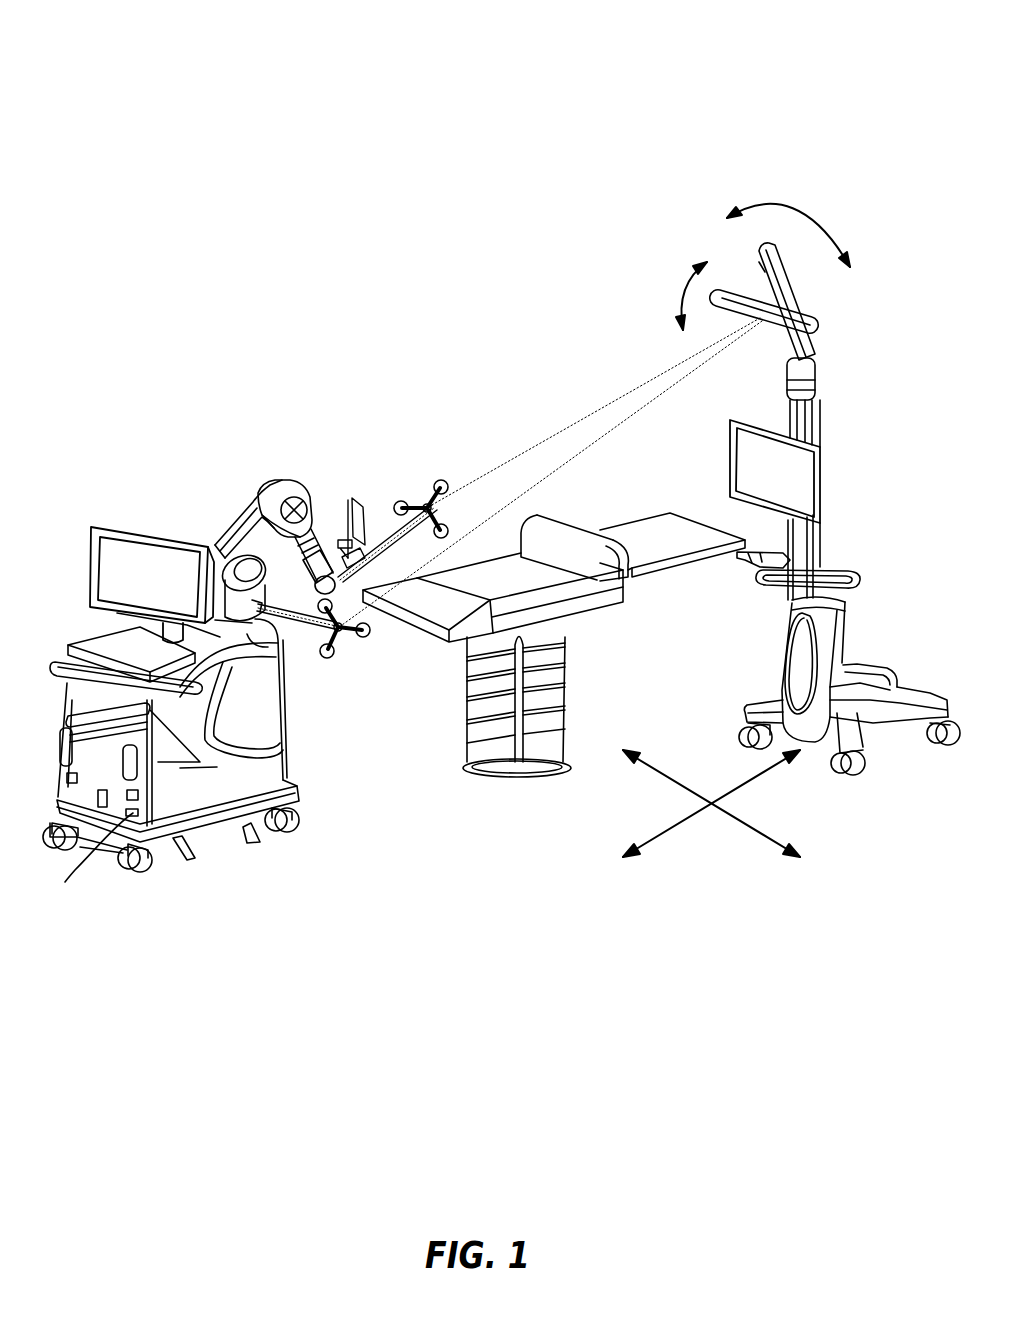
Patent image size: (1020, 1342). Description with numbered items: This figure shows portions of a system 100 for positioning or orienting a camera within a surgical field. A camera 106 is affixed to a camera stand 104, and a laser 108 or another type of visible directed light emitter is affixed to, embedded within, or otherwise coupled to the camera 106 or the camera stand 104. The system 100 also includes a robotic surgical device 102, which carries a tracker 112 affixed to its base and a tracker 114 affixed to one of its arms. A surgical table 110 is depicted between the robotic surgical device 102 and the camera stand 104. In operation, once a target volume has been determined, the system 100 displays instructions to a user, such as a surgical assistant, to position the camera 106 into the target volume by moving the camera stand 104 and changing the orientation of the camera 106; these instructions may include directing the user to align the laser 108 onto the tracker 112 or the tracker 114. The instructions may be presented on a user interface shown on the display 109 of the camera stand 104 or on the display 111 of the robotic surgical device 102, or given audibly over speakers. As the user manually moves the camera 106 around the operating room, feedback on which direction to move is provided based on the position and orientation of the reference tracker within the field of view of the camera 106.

The system 100 is at (684, 42).
The robotic surgical device 102 is at (282, 478).
The camera stand 104 is at (820, 390).
The camera 106 is at (820, 330).
The laser 108 is at (770, 328).
The display 109 is at (813, 467).
The surgical table 110 is at (648, 517).
The display 111 is at (112, 540).
The tracker 112 is at (333, 660).
The tracker 114 is at (437, 483).